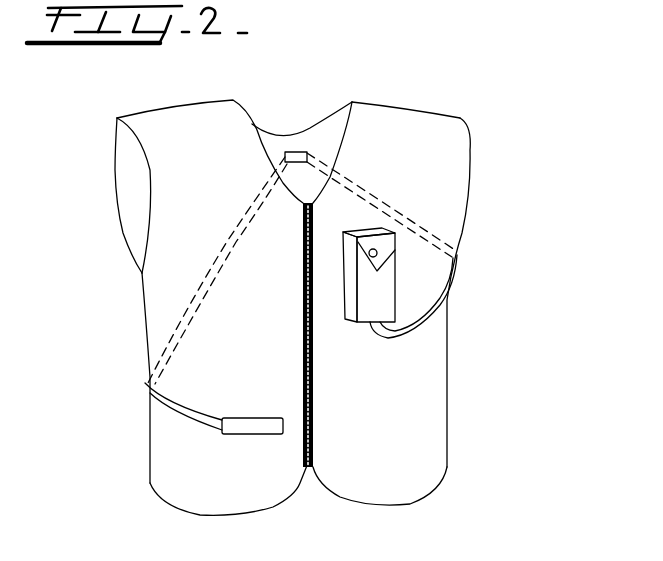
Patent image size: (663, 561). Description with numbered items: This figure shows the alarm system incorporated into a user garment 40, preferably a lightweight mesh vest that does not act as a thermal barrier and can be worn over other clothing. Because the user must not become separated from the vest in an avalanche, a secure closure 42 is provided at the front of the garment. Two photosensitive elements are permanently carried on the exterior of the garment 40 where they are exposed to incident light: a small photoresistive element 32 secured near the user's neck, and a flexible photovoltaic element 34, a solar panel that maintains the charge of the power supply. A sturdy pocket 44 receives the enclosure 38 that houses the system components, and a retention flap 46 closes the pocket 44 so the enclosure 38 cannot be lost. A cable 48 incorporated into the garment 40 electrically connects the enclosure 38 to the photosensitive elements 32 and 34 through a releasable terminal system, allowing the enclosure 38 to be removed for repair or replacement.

The photosensitive element 32 is at (297, 152).
The photovoltaic element 34 is at (247, 425).
The enclosure 38 is at (385, 297).
The user garment 40 is at (417, 397).
The secure closure 42 is at (313, 430).
The pocket 44 is at (387, 280).
The retention flap 46 is at (378, 243).
The cable 48 is at (420, 323).